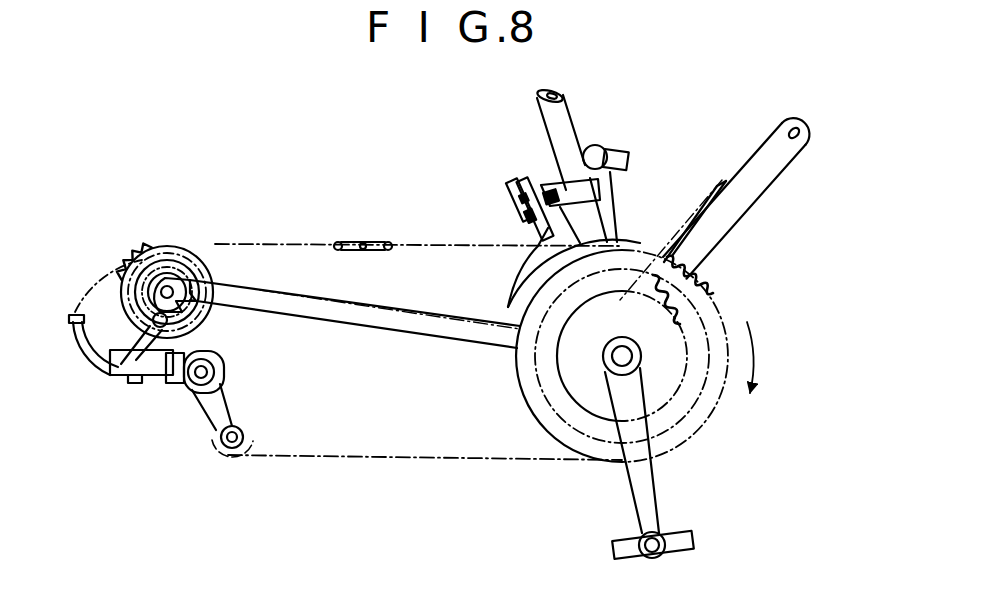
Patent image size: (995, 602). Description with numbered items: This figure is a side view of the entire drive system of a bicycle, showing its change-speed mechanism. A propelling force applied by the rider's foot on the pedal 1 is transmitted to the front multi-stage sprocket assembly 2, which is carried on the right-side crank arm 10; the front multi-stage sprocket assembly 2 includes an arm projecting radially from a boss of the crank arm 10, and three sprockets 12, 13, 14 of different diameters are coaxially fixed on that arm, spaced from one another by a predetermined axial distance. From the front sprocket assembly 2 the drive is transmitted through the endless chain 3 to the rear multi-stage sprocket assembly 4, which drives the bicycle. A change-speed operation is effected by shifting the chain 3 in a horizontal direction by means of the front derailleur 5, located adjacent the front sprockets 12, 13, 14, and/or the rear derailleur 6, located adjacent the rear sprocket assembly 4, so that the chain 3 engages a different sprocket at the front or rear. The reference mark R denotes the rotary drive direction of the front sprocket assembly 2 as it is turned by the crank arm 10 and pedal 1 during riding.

The pedal 1 is at (621, 154).
The front multi-stage sprocket assembly 2 is at (630, 356).
The endless chain 3 is at (380, 255).
The rear multi-stage sprocket assembly 4 is at (130, 258).
The front derailleur 5 is at (513, 259).
The rear derailleur 6 is at (198, 427).
The right-side crank arm 10 is at (660, 498).
The sprocket 12 is at (556, 356).
The sprocket 13 is at (545, 390).
The sprocket 14 is at (548, 431).
The rotary drive direction R is at (758, 338).